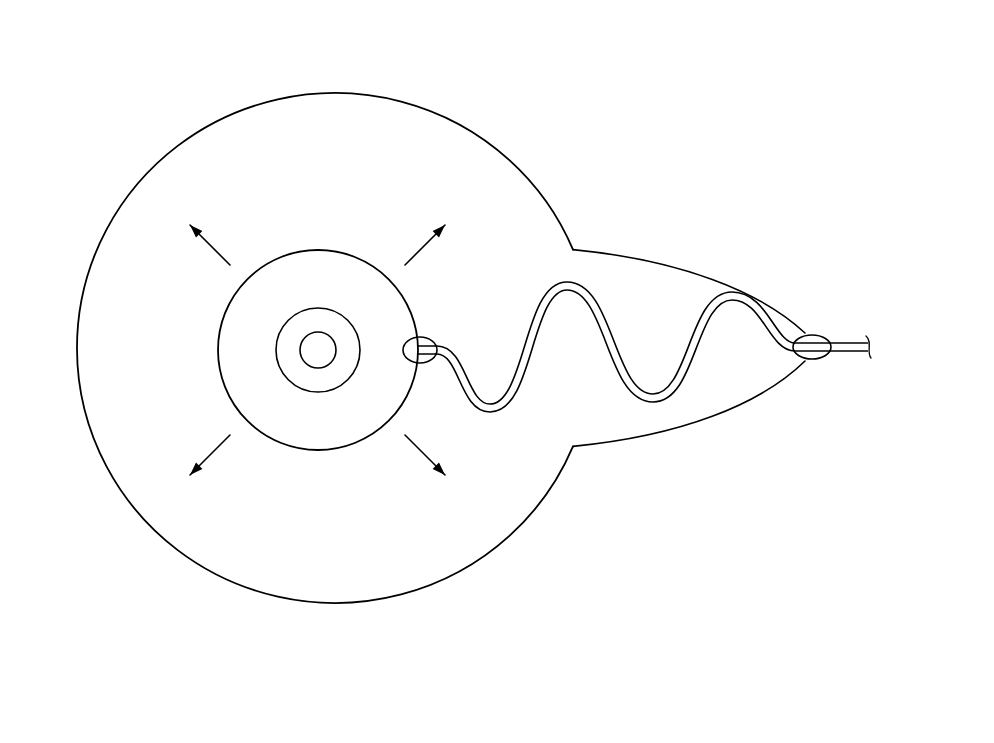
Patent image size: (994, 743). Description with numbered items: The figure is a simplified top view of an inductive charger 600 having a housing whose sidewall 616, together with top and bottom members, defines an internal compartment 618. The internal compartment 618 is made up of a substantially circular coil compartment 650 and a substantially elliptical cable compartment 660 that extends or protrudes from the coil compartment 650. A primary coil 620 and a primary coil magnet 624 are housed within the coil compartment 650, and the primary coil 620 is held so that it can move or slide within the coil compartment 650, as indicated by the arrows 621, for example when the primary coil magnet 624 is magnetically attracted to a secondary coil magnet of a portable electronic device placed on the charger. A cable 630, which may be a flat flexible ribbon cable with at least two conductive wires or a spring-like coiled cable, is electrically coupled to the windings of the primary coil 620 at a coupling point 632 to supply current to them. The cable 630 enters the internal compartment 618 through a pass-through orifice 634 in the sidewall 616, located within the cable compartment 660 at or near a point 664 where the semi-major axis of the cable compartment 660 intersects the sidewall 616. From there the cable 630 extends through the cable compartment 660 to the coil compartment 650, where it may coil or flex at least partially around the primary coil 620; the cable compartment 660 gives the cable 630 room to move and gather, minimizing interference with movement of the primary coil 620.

The inductive charger 600 is at (186, 113).
The coil compartment 650 is at (314, 116).
The compartment 618 is at (110, 266).
The sidewall 616 is at (111, 485).
The primary coil 620 is at (230, 351).
The primary coil magnet 624 is at (318, 342).
The arrows 621 is at (213, 248).
The coupling point 632 is at (425, 338).
The cable 630 is at (607, 338).
The cable compartment 660 is at (677, 288).
The point 664 is at (818, 333).
The pass-through orifice 634 is at (834, 359).